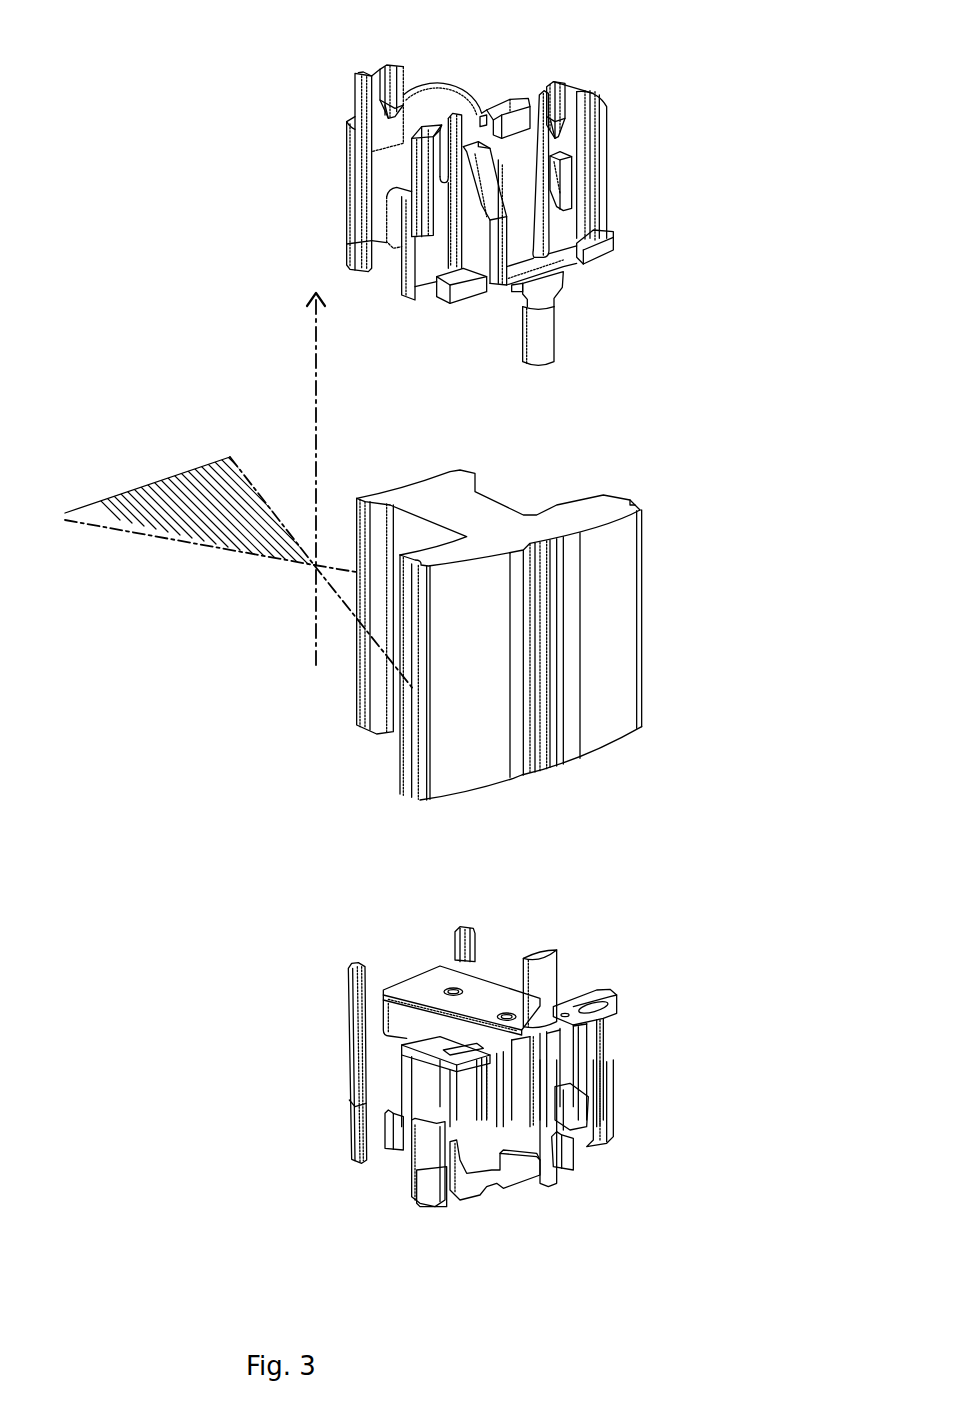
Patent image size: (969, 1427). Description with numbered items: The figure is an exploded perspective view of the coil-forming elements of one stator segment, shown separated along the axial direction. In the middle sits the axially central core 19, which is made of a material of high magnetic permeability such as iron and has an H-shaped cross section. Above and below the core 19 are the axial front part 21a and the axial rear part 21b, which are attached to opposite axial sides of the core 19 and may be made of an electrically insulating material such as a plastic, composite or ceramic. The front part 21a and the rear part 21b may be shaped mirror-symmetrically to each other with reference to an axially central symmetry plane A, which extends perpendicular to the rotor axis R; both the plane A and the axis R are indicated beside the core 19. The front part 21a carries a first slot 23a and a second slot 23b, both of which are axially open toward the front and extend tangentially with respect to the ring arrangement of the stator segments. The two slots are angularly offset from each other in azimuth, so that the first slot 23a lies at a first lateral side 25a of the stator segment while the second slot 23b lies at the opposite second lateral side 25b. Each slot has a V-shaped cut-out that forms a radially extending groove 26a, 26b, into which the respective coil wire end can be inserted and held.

The core 19 is at (668, 603).
The front part 21a is at (666, 223).
The rear part 21b is at (653, 1063).
The first slot 23a is at (377, 70).
The second slot 23b is at (540, 88).
The first lateral side 25a is at (326, 173).
The second lateral side 25b is at (620, 92).
The radially extending groove 26a is at (388, 118).
The radially extending groove 26b is at (557, 137).
The rotor axis R is at (314, 417).
The symmetry plane A is at (203, 490).